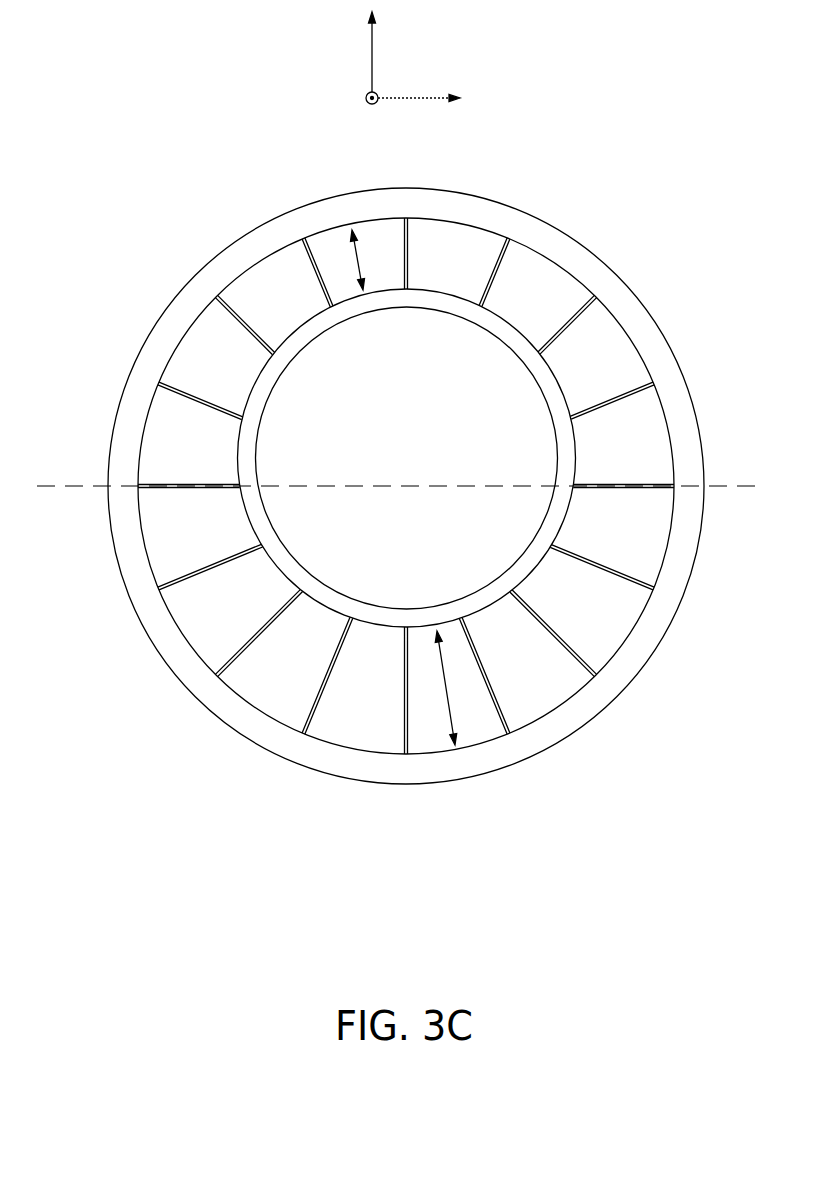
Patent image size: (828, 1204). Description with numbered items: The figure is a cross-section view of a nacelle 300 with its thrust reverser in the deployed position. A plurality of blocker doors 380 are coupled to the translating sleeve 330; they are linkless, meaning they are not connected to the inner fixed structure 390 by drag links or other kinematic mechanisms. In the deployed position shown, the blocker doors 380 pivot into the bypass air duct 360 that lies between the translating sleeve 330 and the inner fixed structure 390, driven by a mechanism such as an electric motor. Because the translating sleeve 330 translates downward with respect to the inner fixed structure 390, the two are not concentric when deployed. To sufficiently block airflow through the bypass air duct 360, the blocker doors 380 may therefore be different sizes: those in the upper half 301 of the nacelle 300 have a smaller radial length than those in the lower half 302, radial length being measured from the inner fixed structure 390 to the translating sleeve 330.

The nacelle 300 is at (147, 88).
The upper half 301 is at (86, 428).
The lower half 302 is at (88, 532).
The translating sleeve 330 is at (555, 227).
The bypass air duct 360 is at (273, 281).
The blocker doors 380 is at (630, 330).
The inner fixed structure 390 is at (437, 312).